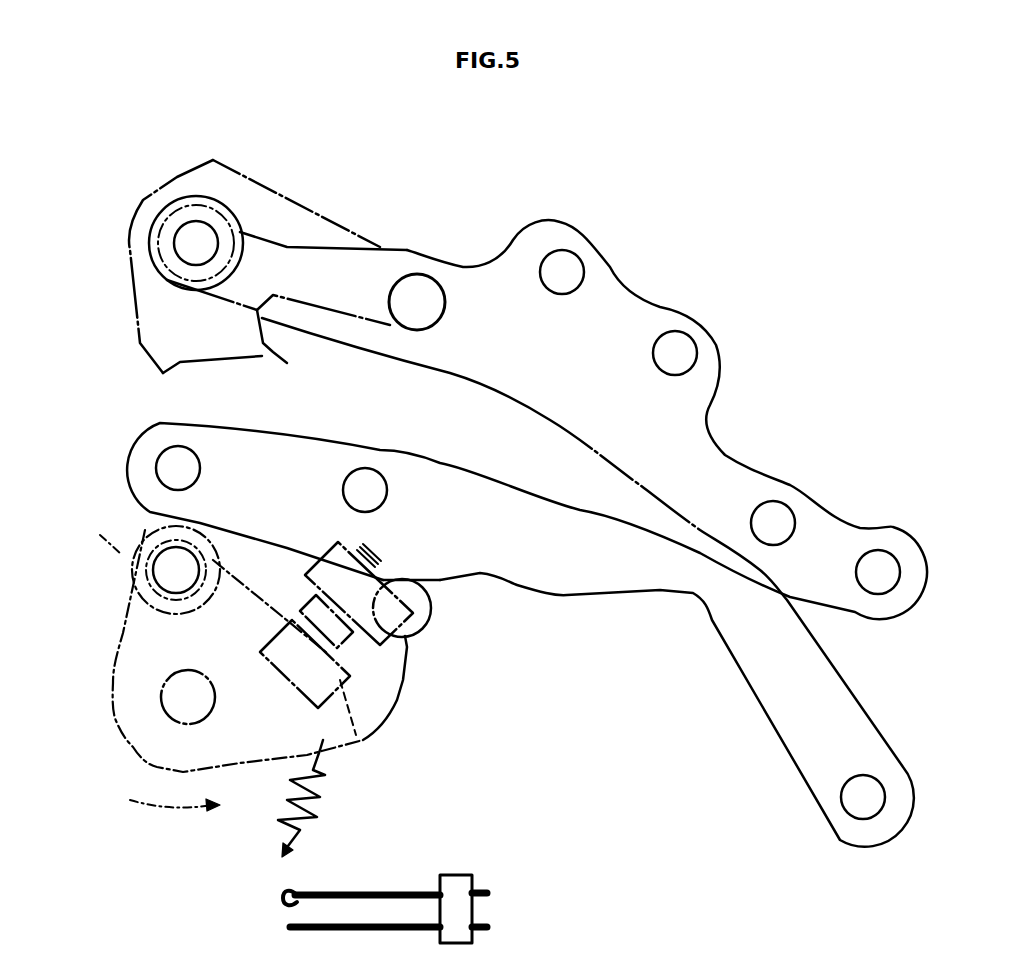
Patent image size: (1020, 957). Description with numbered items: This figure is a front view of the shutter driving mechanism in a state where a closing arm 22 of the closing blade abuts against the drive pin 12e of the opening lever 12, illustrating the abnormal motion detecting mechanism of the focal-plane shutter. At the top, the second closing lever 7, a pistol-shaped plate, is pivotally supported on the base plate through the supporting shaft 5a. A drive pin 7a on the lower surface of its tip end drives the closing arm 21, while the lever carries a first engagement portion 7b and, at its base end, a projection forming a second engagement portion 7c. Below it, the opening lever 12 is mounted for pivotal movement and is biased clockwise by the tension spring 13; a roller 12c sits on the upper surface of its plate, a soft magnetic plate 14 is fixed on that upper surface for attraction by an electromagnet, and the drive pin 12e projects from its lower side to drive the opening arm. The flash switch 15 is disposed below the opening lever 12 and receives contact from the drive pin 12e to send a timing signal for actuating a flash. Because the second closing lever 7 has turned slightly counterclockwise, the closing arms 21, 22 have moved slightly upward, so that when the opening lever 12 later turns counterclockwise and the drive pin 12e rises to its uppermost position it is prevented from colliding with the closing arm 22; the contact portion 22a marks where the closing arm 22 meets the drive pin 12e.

The supporting shaft 5a is at (208, 222).
The second closing lever 7 is at (307, 250).
The drive pin 7a is at (413, 270).
The first engagement portion 7b is at (287, 363).
The second engagement portion 7c is at (163, 373).
The opening lever 12 is at (296, 665).
The roller 12c is at (133, 555).
The drive pin 12e is at (433, 627).
The tension spring 13 is at (300, 820).
The soft magnetic plate 14 is at (413, 665).
The flash switch 15 is at (482, 885).
The closing arm 21 is at (640, 290).
The closing arm 22 is at (588, 582).
The contact portion 22a is at (440, 582).